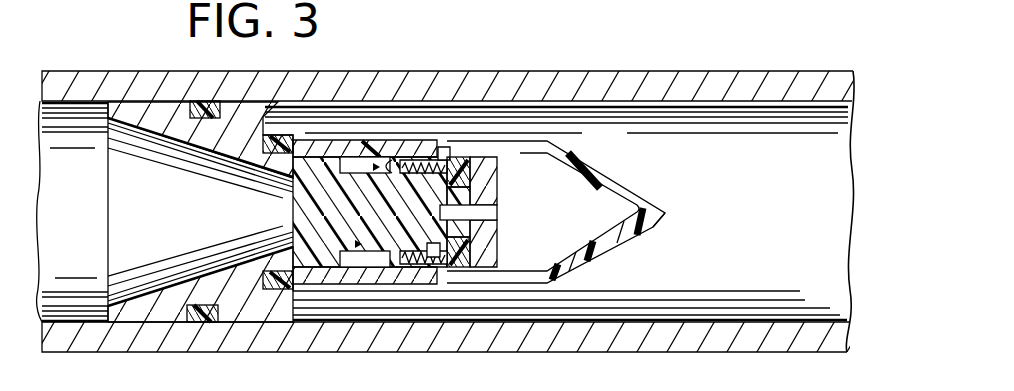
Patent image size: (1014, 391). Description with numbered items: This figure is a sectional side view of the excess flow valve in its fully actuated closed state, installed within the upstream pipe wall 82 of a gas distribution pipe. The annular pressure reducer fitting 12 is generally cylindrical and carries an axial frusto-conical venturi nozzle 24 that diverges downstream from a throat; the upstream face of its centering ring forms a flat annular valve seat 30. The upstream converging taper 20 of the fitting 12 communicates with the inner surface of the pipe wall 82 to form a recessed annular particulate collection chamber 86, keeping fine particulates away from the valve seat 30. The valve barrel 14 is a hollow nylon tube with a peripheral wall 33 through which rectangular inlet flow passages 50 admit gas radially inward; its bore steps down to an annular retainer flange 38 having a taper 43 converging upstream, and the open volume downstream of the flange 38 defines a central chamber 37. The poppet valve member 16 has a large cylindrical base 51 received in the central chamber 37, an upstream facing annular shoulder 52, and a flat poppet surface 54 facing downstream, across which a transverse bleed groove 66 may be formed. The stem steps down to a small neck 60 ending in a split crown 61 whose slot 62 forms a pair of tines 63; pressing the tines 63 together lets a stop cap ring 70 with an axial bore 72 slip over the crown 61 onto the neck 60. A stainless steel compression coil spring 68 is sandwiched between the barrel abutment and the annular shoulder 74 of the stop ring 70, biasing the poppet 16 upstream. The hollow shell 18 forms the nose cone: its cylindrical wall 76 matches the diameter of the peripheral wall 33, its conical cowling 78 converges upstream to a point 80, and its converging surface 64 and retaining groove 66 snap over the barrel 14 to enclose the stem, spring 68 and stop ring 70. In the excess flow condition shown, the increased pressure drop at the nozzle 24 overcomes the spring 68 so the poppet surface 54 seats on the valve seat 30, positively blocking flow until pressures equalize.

The pressure reducer fitting 12 is at (146, 322).
The valve barrel 14 is at (350, 286).
The poppet valve member 16 is at (398, 140).
The hollow shell 18 is at (596, 165).
The frusto-conically converging taper 20 is at (272, 100).
The venturi nozzle 24 is at (185, 278).
The valve seat 30 is at (296, 230).
The peripheral wall 33 is at (200, 100).
The central chamber 37 is at (328, 272).
The annular retainer flange 38 is at (375, 258).
The taper 43 is at (423, 160).
The peripheral inlet flow passages 50 is at (363, 150).
The cylindrical base 51 is at (330, 140).
The annular shoulder 52 is at (373, 160).
The poppet surface 54 is at (275, 170).
The neck 60 is at (468, 162).
The split crown 61 is at (498, 255).
The slot 62 is at (497, 210).
The tines 63 is at (497, 183).
The converging surface 64 is at (410, 270).
The retaining groove 66 is at (462, 157).
The compression coil spring 68 is at (435, 250).
The stop cap ring 70 is at (473, 250).
The axial bore 72 is at (473, 237).
The annular shoulder 74 is at (443, 152).
The cylindrical wall 76 is at (530, 285).
The conical cowling 78 is at (603, 255).
The point 80 is at (667, 214).
The upstream pipe wall 82 is at (620, 353).
The particulate collection chamber 86 is at (291, 324).